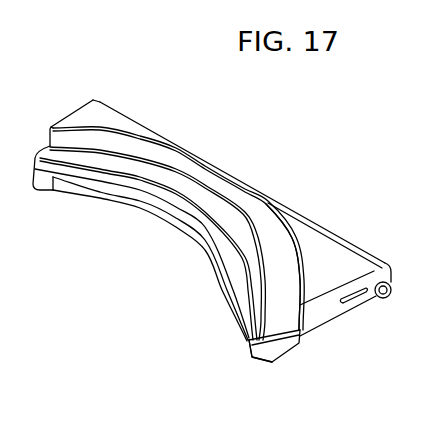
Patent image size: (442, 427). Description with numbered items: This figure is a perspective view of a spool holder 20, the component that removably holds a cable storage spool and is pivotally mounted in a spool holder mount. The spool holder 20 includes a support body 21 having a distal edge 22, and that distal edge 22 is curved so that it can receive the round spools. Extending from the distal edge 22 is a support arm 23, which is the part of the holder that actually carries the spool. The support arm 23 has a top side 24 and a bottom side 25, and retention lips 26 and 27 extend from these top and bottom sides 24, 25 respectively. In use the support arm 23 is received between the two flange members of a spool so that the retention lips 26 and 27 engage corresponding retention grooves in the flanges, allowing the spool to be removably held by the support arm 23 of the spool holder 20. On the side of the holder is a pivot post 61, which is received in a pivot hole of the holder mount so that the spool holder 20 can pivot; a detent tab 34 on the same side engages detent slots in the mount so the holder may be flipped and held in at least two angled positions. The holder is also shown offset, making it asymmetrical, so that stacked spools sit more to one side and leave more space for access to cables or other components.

The spool holder 20 is at (327, 186).
The support body 21 is at (323, 252).
The distal edge 22 is at (182, 162).
The support arm 23 is at (236, 220).
The top side 24 is at (283, 313).
The bottom side 25 is at (269, 362).
The retention lip 26 is at (256, 334).
The retention lip 27 is at (259, 362).
The detent tab 34 is at (357, 298).
The pivot post 61 is at (392, 292).